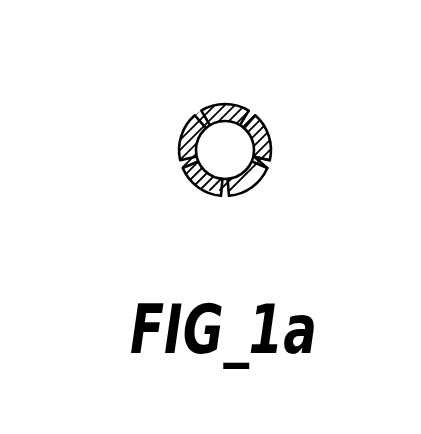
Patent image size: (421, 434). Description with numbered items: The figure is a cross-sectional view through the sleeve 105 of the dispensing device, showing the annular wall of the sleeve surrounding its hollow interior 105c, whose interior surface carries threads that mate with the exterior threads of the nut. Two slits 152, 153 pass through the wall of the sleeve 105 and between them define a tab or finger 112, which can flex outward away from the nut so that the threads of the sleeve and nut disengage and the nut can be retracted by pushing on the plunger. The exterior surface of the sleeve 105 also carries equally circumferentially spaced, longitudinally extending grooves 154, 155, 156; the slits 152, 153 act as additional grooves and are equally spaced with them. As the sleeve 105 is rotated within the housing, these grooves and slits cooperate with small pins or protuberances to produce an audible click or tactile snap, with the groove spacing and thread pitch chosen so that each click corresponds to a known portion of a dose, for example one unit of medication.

The sleeve 105 is at (146, 158).
The hollow interior 105c is at (222, 138).
The tab or finger 112 is at (240, 108).
The slit 152 is at (258, 112).
The slit 153 is at (205, 120).
The groove 154 is at (267, 165).
The groove 155 is at (225, 197).
The groove 156 is at (185, 168).